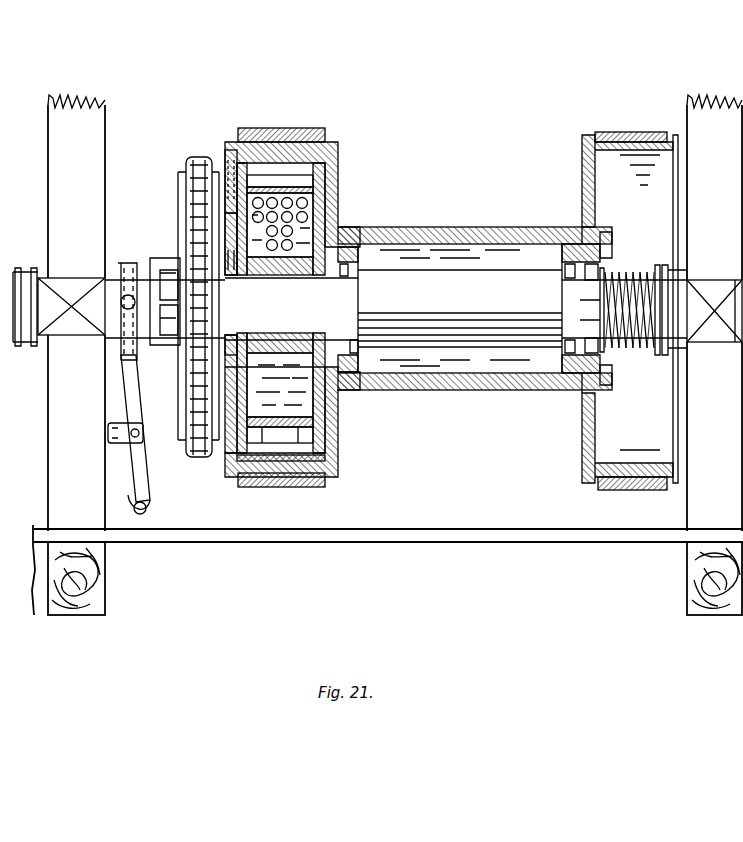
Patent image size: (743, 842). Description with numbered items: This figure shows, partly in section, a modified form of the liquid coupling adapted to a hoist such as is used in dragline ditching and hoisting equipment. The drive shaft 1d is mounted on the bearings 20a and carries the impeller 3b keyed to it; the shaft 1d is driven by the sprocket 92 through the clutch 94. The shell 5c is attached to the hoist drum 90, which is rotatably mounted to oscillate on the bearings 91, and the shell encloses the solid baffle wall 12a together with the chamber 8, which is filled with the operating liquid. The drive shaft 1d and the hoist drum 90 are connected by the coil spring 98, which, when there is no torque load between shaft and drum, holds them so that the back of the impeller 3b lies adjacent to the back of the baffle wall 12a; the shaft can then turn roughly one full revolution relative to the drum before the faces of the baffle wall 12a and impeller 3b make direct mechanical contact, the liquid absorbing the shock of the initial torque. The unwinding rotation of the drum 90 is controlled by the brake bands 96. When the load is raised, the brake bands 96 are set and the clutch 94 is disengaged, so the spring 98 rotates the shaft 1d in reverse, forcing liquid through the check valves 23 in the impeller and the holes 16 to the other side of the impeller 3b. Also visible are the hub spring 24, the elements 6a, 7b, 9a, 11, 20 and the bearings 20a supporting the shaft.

The drive shaft 1d is at (390, 280).
The impeller 3b is at (338, 208).
The shell 5c is at (338, 172).
The cover ring 6a is at (232, 175).
The bottom cap 7b is at (297, 483).
The chamber 8 is at (280, 307).
The retaining ring 9a is at (240, 190).
The shaft 11 is at (322, 340).
The baffle wall 12a is at (297, 395).
The holes 16 is at (272, 480).
The frame post 20 is at (247, 124).
The bearings 20a is at (82, 282).
The check valves 23 is at (340, 190).
The spring 24 is at (277, 342).
The hoist drum 90 is at (470, 230).
The bearings 91 is at (360, 278).
The sprocket 92 is at (193, 163).
The clutch 94 is at (143, 283).
The brake bands 96 is at (300, 129).
The coil spring 98 is at (616, 278).